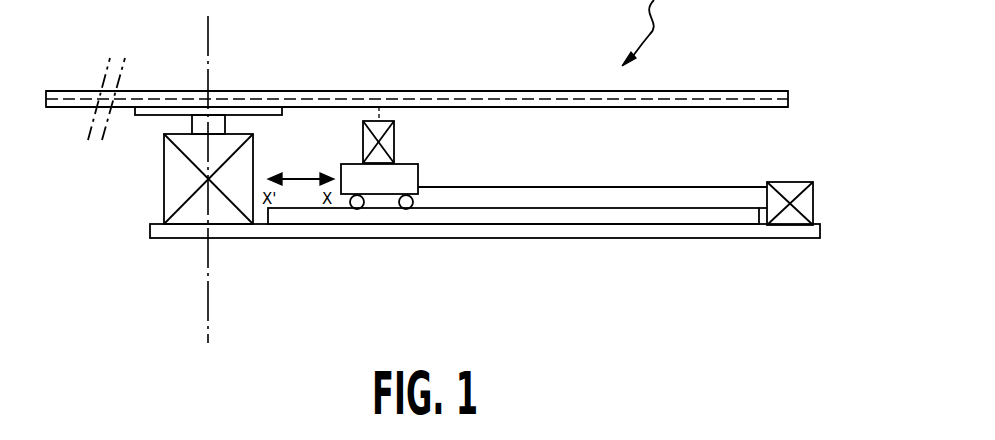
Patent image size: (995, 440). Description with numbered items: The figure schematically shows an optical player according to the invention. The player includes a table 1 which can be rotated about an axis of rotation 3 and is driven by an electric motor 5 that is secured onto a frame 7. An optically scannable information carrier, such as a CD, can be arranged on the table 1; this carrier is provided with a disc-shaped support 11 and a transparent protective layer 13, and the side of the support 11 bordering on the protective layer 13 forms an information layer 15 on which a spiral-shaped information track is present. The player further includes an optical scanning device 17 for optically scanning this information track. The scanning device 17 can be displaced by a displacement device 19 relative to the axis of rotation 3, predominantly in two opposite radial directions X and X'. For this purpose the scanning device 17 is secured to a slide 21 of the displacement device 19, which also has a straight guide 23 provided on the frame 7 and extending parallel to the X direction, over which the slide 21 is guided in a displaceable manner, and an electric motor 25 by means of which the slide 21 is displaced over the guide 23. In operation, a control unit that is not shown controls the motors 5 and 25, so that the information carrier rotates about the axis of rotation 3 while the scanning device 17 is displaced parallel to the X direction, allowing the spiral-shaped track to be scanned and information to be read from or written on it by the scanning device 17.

The table 1 is at (162, 110).
The axis of rotation 3 is at (208, 32).
The electric motor 5 is at (173, 182).
The frame 7 is at (503, 233).
The disc-shaped support 11 is at (449, 95).
The transparent protective layer 13 is at (560, 110).
The information layer 15 is at (517, 103).
The optical scanning device 17 is at (394, 143).
The displacement device 19 is at (632, 183).
The slide 21 is at (408, 173).
The straight guide 23 is at (609, 217).
The electric motor 25 is at (790, 187).